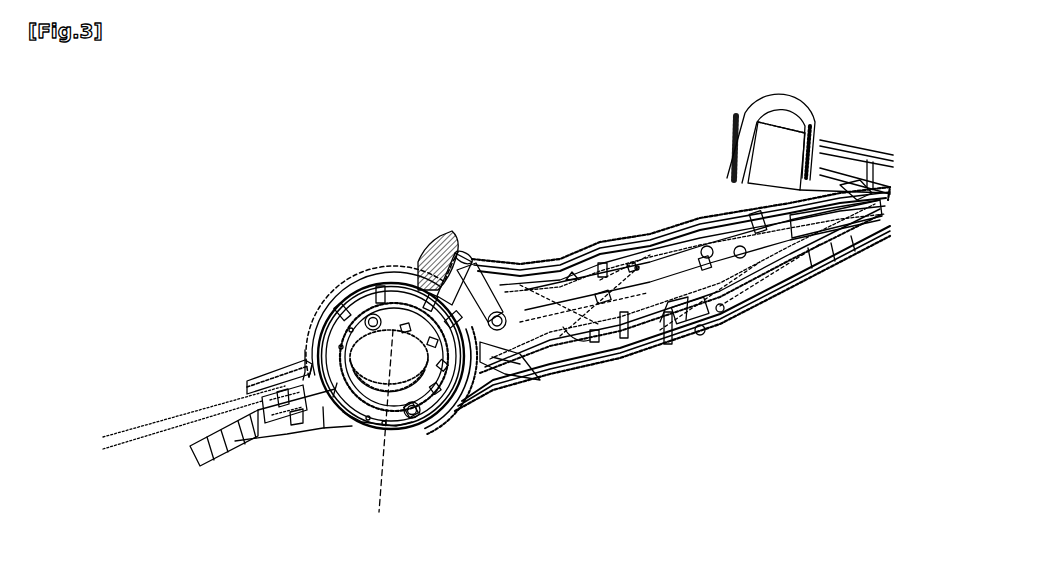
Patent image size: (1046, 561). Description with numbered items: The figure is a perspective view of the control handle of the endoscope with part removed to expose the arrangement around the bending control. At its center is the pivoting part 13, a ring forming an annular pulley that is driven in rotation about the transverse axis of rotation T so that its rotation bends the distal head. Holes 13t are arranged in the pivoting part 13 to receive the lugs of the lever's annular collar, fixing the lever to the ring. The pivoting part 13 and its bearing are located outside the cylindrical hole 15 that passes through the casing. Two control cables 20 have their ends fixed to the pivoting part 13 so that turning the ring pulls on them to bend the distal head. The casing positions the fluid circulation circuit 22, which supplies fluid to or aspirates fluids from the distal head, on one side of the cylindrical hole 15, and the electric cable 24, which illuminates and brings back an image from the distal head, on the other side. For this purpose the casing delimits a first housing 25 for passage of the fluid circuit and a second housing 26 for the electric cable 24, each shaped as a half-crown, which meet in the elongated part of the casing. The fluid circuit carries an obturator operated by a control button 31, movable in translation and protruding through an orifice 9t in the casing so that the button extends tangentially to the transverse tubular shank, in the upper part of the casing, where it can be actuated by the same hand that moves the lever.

The orifice 9t is at (473, 256).
The pivoting part 13 is at (433, 406).
The holes 13t is at (378, 295).
The cylindrical hole 15 is at (409, 366).
The control cables 20 is at (563, 327).
The fluid circulation circuit 22 is at (492, 358).
The electric cable 24 is at (318, 343).
The first housing 25 is at (472, 400).
The second housing 26 is at (327, 307).
The control button 31 is at (436, 248).
The transverse axis of rotation T is at (392, 421).